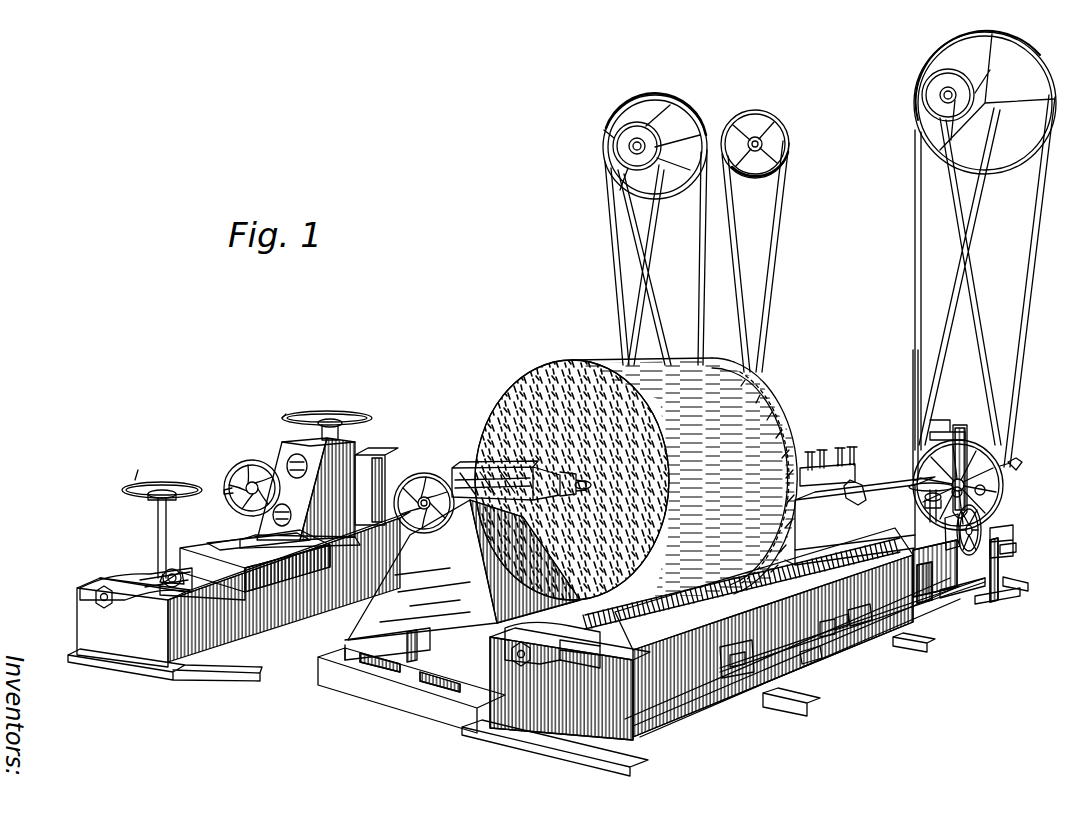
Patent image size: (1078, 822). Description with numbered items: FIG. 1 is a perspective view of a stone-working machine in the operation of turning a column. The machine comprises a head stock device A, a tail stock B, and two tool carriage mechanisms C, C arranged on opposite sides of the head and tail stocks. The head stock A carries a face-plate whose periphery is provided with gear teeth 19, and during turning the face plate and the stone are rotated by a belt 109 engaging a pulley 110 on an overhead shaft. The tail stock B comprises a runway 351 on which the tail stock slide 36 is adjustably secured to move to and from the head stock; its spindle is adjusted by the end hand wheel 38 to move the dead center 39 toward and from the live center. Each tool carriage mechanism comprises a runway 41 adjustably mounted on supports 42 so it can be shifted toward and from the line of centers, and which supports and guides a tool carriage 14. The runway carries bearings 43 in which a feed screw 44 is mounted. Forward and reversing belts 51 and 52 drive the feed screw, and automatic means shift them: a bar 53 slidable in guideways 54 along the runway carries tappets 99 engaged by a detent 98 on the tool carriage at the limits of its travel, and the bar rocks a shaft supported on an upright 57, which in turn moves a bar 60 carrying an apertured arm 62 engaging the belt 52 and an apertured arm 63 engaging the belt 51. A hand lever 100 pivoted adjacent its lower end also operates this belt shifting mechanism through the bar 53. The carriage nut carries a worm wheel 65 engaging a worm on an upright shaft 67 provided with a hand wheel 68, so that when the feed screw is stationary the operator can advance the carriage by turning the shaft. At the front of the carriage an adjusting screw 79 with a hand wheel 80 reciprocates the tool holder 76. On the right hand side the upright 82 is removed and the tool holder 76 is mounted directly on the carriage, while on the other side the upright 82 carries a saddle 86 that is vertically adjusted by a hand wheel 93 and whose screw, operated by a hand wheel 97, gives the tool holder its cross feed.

The tool carriage 14 is at (323, 565).
The gear teeth 19 is at (768, 375).
The tail stock slide 36 is at (490, 553).
The end hand wheel 38 is at (444, 470).
The dead center 39 is at (582, 483).
The runway 41 is at (88, 628).
The supports 42 is at (256, 672).
The bearings 43 is at (118, 582).
The feed screw 44 is at (738, 612).
The belt 51 is at (618, 270).
The belt 52 is at (651, 260).
The bar 53 is at (904, 597).
The guideways 54 is at (755, 667).
The upright 57 is at (932, 440).
The bar 60 is at (960, 434).
The apertured arm 62 is at (1020, 462).
The apertured arm 63 is at (914, 412).
The worm wheel 65 is at (176, 568).
The upright shaft 67 is at (157, 533).
The hand wheel 68 is at (176, 484).
The tool holder 76 is at (855, 508).
The adjusting screw 79 is at (962, 565).
The hand wheel 80 is at (1010, 536).
The upright 82 is at (308, 494).
The saddle 86 is at (362, 458).
The hand wheel 93 is at (345, 400).
The hand wheel 97 is at (250, 466).
The detent 98 is at (932, 592).
The tappets 99 is at (858, 624).
The hand lever 100 is at (1014, 549).
The belt 109 is at (772, 248).
The pulley 110 is at (778, 133).
The runway 351 is at (392, 690).
The head stock device A is at (802, 357).
The tail stock B is at (402, 574).
The tool carriage mechanism C is at (862, 458).